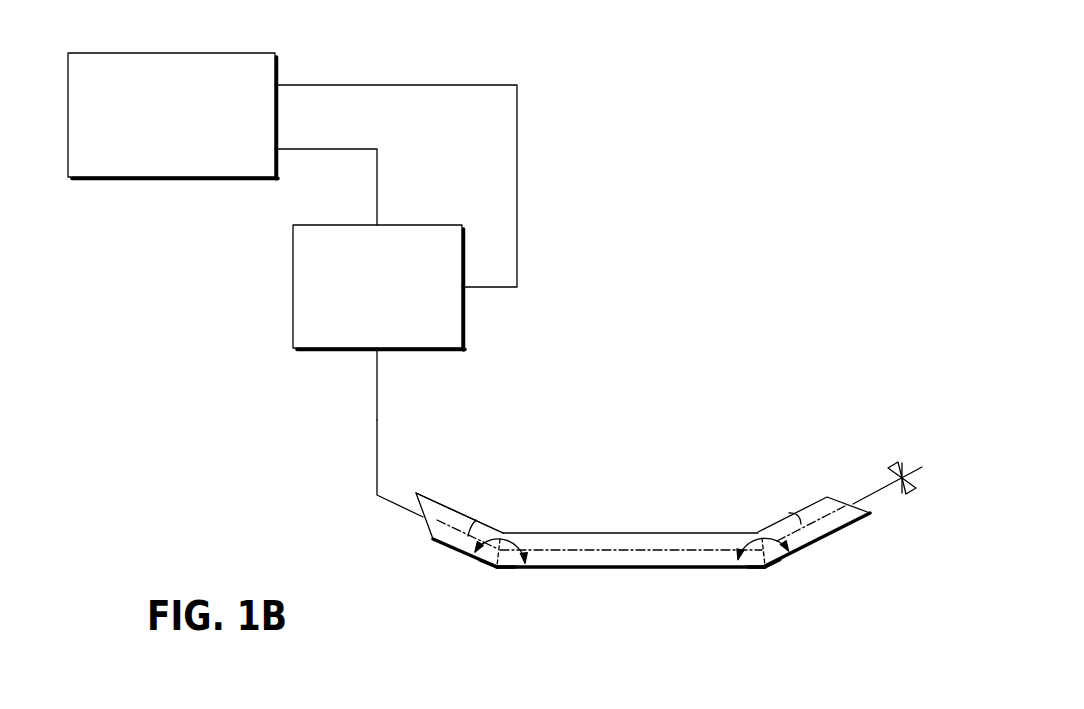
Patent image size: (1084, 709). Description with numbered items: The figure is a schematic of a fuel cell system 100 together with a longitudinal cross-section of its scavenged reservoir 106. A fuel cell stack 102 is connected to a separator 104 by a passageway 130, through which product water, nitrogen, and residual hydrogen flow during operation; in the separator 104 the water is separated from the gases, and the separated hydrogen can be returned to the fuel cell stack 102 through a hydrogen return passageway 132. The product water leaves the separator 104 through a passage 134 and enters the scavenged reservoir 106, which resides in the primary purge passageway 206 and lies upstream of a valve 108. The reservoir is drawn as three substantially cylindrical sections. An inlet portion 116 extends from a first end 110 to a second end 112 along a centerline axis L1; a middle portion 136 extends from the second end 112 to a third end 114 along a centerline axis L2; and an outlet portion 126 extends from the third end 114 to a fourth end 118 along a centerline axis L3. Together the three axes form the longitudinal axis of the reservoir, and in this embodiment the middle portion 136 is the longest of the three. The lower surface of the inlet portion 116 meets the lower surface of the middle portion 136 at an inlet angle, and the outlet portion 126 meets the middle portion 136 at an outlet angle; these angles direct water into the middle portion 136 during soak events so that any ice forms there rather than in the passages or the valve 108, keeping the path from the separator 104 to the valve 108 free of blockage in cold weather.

The fuel cell system 100 is at (226, 409).
The fuel cell stack 102 is at (185, 129).
The separator 104 is at (390, 302).
The scavenged reservoir 106 is at (650, 416).
The valve 108 is at (897, 462).
The first end 110 is at (423, 515).
The second end 112 is at (496, 570).
The third end 114 is at (766, 568).
The inlet portion 116 is at (453, 508).
The fourth end 118 is at (847, 504).
The outlet portion 126 is at (823, 542).
The passageway 130 is at (378, 190).
The hydrogen return passageway 132 is at (517, 187).
The passage 134 is at (377, 442).
The middle portion 136 is at (612, 568).
The primary purge passageway 206 is at (378, 393).
The centerline axis L1 is at (483, 516).
The centerline axis L2 is at (658, 548).
The centerline axis L3 is at (782, 516).